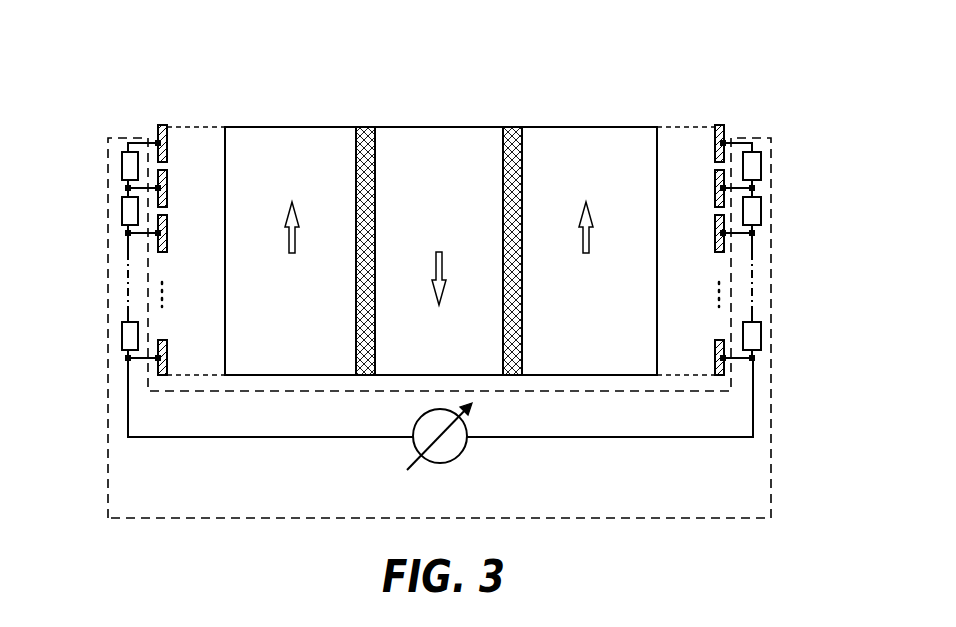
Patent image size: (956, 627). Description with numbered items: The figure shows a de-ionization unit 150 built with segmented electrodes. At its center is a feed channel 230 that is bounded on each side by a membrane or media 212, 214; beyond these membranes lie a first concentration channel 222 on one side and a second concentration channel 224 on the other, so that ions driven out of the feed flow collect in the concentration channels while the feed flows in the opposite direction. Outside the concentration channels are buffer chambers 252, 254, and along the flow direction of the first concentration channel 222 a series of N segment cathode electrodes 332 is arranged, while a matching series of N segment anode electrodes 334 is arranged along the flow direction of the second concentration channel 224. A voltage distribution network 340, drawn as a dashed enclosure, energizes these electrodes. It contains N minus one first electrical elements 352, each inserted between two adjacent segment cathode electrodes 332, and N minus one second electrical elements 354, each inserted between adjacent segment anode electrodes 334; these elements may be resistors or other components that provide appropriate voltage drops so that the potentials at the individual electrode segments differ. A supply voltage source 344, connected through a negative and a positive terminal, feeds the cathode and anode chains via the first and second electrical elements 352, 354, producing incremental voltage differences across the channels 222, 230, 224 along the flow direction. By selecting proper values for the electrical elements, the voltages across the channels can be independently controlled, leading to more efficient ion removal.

The de-ionization unit 150 is at (703, 30).
The membrane or media 212 is at (355, 160).
The membrane or media 214 is at (502, 160).
The first concentration channel 222 is at (309, 162).
The second concentration channel 224 is at (608, 162).
The feed channel 230 is at (458, 162).
The buffer chamber 252 is at (182, 127).
The buffer chamber 254 is at (687, 127).
The segment cathode electrodes 332 is at (90, 397).
The segment anode electrodes 334 is at (723, 133).
The voltage distribution network 340 is at (108, 475).
The supply voltage source 344 is at (440, 463).
The first electrical elements 352 is at (125, 337).
The second electrical elements 354 is at (757, 167).